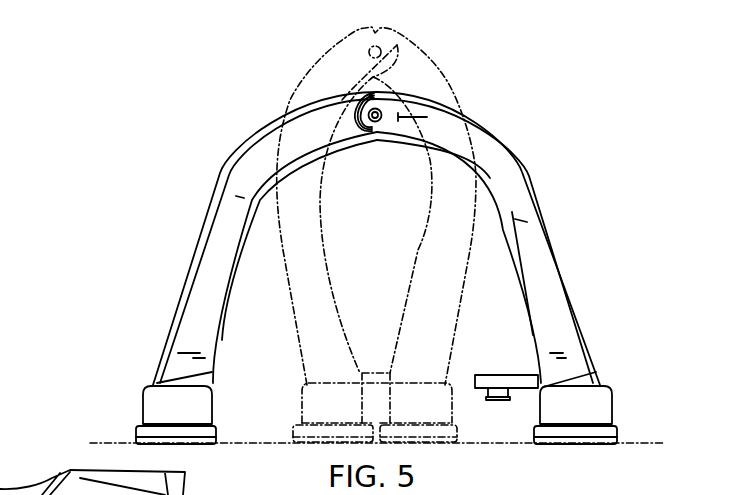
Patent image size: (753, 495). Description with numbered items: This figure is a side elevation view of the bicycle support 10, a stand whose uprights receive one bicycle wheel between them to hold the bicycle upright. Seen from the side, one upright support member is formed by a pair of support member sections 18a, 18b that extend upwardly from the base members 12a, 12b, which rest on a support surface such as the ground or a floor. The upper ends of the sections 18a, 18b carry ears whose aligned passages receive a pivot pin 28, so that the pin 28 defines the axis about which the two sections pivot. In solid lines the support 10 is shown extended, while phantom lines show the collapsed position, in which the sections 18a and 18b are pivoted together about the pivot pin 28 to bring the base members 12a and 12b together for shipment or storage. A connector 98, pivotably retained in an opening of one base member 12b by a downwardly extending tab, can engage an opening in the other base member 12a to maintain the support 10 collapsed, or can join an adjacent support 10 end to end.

The support 10 is at (450, 67).
The support member section 18a is at (233, 152).
The support member section 18b is at (531, 174).
The pivot pin 28 is at (373, 95).
The base member 12a is at (143, 384).
The base member 12b is at (614, 389).
The connector 98 is at (507, 374).